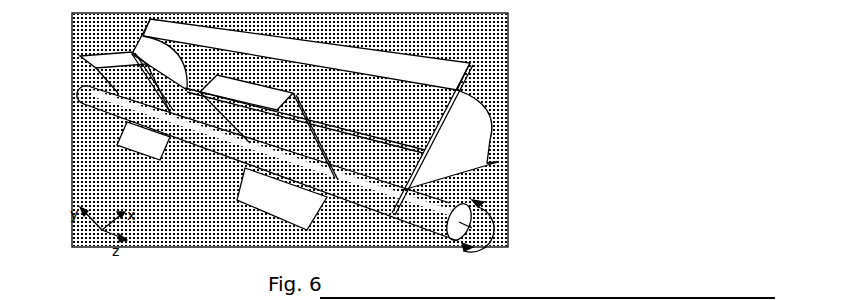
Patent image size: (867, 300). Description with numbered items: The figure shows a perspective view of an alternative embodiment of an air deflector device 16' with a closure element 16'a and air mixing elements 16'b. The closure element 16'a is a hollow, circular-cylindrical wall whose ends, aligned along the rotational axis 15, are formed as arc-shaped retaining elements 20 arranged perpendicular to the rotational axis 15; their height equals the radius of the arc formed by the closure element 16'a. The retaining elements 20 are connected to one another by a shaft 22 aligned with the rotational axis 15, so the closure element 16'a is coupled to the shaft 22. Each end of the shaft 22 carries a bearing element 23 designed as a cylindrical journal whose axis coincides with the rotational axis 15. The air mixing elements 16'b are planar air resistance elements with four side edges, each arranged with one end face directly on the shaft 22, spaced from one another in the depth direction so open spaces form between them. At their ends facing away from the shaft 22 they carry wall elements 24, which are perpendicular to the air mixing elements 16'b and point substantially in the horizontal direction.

The rotational axis 15 is at (260, 130).
The air deflector device 16' is at (541, 52).
The closure element 16'a is at (306, 86).
The air mixing elements 16'b is at (186, 153).
The retaining elements 20 is at (152, 60).
The shaft 22 is at (358, 202).
The bearing elements 23 is at (95, 87).
The wall elements 24 is at (107, 58).